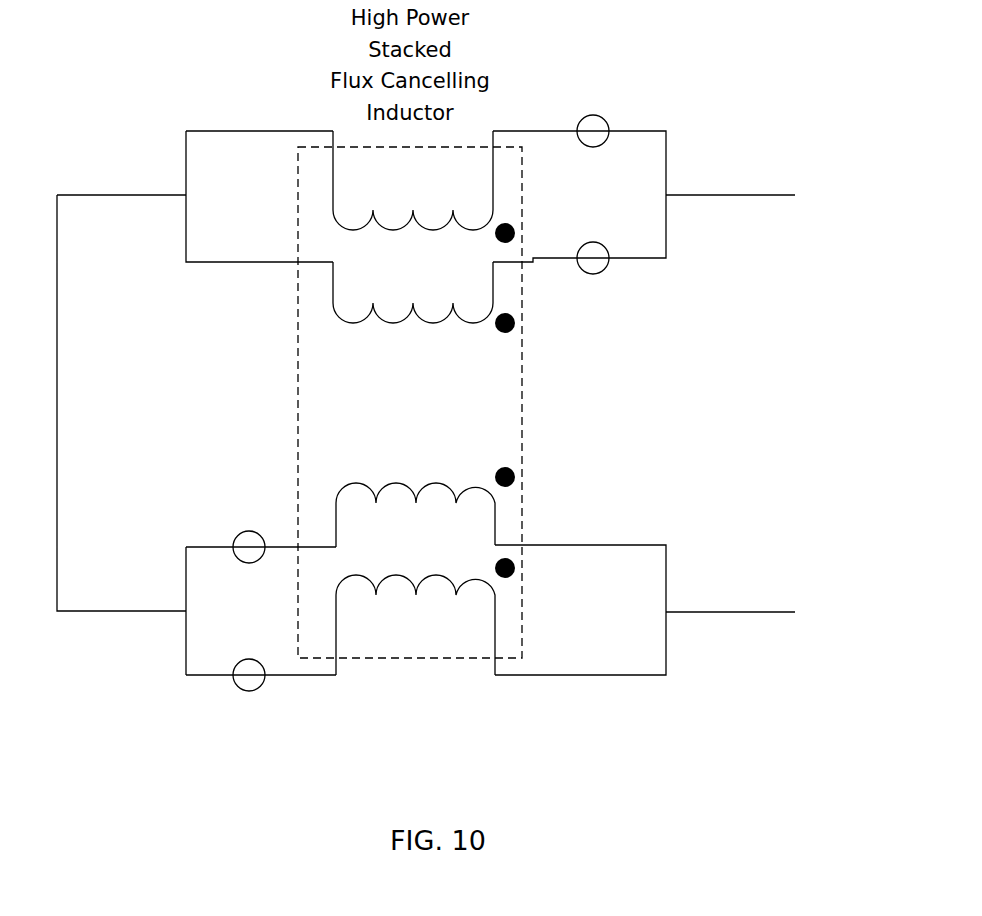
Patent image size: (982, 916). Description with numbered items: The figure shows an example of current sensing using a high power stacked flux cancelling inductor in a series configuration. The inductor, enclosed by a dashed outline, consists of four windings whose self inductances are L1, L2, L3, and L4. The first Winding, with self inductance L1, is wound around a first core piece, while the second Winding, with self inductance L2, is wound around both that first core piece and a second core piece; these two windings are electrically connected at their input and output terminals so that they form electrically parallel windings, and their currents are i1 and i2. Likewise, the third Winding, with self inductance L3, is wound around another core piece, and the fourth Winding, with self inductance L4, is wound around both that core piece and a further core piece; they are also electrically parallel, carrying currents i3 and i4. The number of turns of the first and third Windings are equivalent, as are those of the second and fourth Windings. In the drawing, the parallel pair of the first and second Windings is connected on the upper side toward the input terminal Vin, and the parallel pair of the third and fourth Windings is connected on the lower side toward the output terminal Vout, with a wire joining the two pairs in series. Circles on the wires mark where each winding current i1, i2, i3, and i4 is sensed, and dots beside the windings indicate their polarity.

The self inductance of first Winding L1 is at (413, 197).
The self inductance of second Winding L2 is at (413, 311).
The self inductance of third Winding L3 is at (415, 502).
The self inductance of fourth Winding L4 is at (415, 611).
The current in first Winding i1 is at (590, 115).
The current in second Winding i2 is at (592, 273).
The current in third Winding i3 is at (250, 530).
The current in fourth Winding i4 is at (250, 690).
The input terminal Vin is at (763, 193).
The output terminal Vout is at (767, 610).